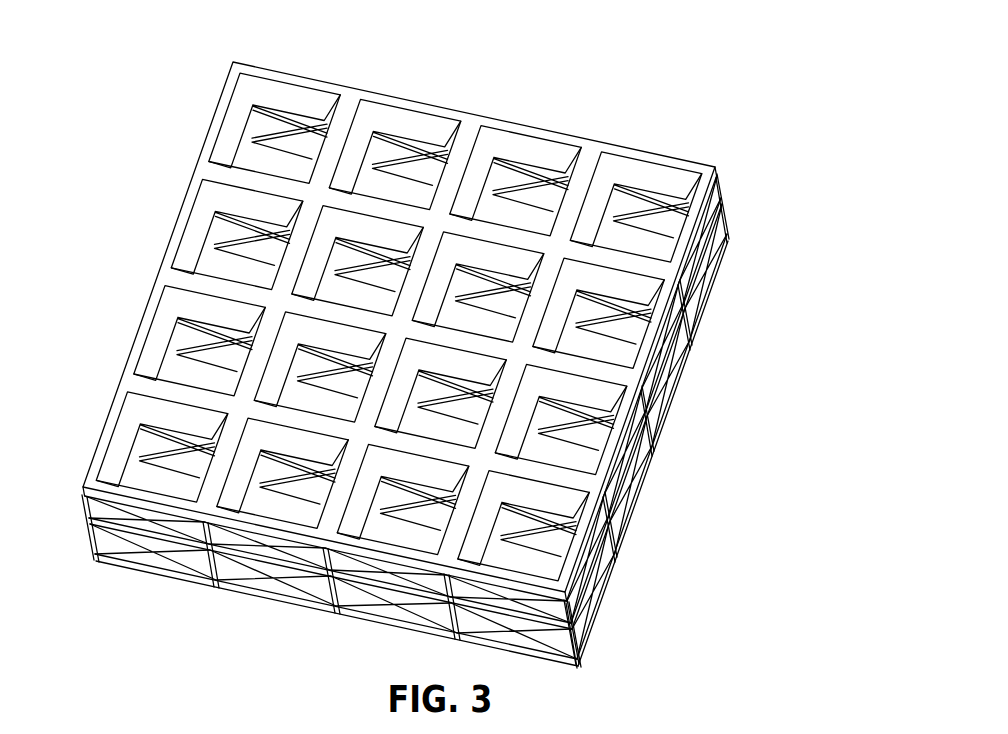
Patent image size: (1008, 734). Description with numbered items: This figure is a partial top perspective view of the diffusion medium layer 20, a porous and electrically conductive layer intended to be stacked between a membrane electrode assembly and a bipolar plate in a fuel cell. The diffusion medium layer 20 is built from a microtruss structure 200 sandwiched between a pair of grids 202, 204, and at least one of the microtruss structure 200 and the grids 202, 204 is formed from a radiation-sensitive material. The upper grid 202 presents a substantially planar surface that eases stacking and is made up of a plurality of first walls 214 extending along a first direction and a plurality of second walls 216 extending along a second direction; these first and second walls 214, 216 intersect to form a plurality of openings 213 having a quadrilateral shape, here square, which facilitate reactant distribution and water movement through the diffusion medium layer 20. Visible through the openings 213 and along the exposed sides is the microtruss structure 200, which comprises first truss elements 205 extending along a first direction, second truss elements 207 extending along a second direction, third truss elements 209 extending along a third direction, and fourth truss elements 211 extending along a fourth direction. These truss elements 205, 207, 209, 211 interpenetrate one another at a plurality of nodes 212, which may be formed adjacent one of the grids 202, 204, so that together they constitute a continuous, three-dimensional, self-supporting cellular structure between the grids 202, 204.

The diffusion medium layer 20 is at (690, 94).
The microtruss structure 200 is at (728, 220).
The grid 202 is at (683, 162).
The grid 204 is at (715, 282).
The first truss elements 205 is at (567, 667).
The second truss elements 207 is at (229, 562).
The third truss elements 209 is at (512, 532).
The fourth truss elements 211 is at (337, 560).
The nodes 212 is at (393, 607).
The openings 213 is at (480, 268).
The first walls 214 is at (262, 84).
The second walls 216 is at (320, 241).